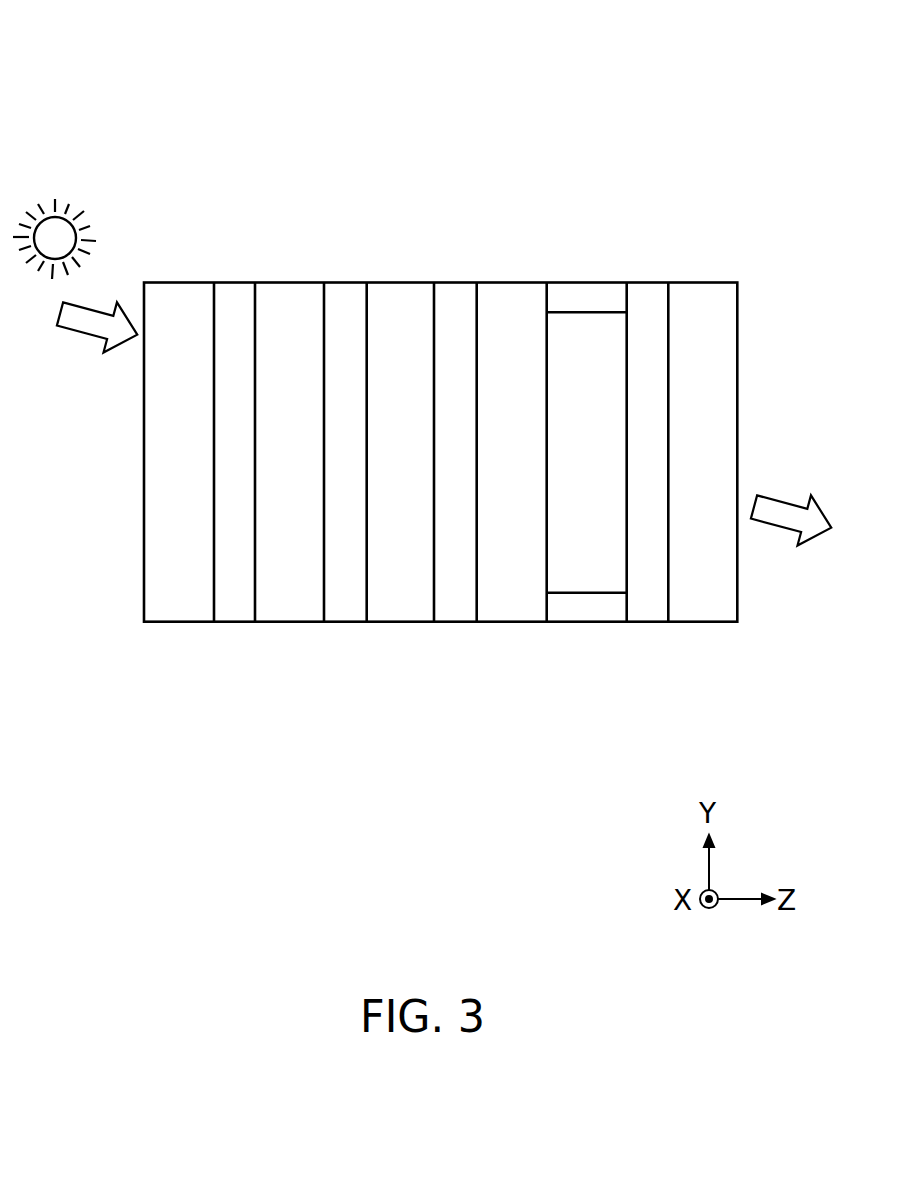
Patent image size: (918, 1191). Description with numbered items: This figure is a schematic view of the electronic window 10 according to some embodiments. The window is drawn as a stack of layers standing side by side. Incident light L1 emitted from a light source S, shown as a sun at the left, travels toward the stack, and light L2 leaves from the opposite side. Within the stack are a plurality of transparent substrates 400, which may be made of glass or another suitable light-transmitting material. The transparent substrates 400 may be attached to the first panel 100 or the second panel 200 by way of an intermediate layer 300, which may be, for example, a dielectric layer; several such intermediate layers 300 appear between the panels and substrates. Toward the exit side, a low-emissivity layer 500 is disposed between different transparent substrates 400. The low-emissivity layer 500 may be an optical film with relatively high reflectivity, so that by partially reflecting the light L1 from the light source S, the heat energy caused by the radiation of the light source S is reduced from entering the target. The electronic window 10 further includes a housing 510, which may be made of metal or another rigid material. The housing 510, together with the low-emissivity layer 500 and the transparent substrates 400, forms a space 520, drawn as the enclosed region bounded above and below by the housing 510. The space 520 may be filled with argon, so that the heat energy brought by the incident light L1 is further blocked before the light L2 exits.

The electronic window 10 is at (77, 42).
The first panel 100 is at (291, 292).
The second panel 200 is at (400, 292).
The intermediate layer 300 is at (235, 613).
The transparent substrate 400 is at (180, 292).
The low-emissivity layer 500 is at (647, 613).
The housing 510 is at (585, 292).
The space 520 is at (613, 466).
The light source S is at (62, 212).
The light L1 is at (80, 337).
The outgoing light L2 is at (785, 497).